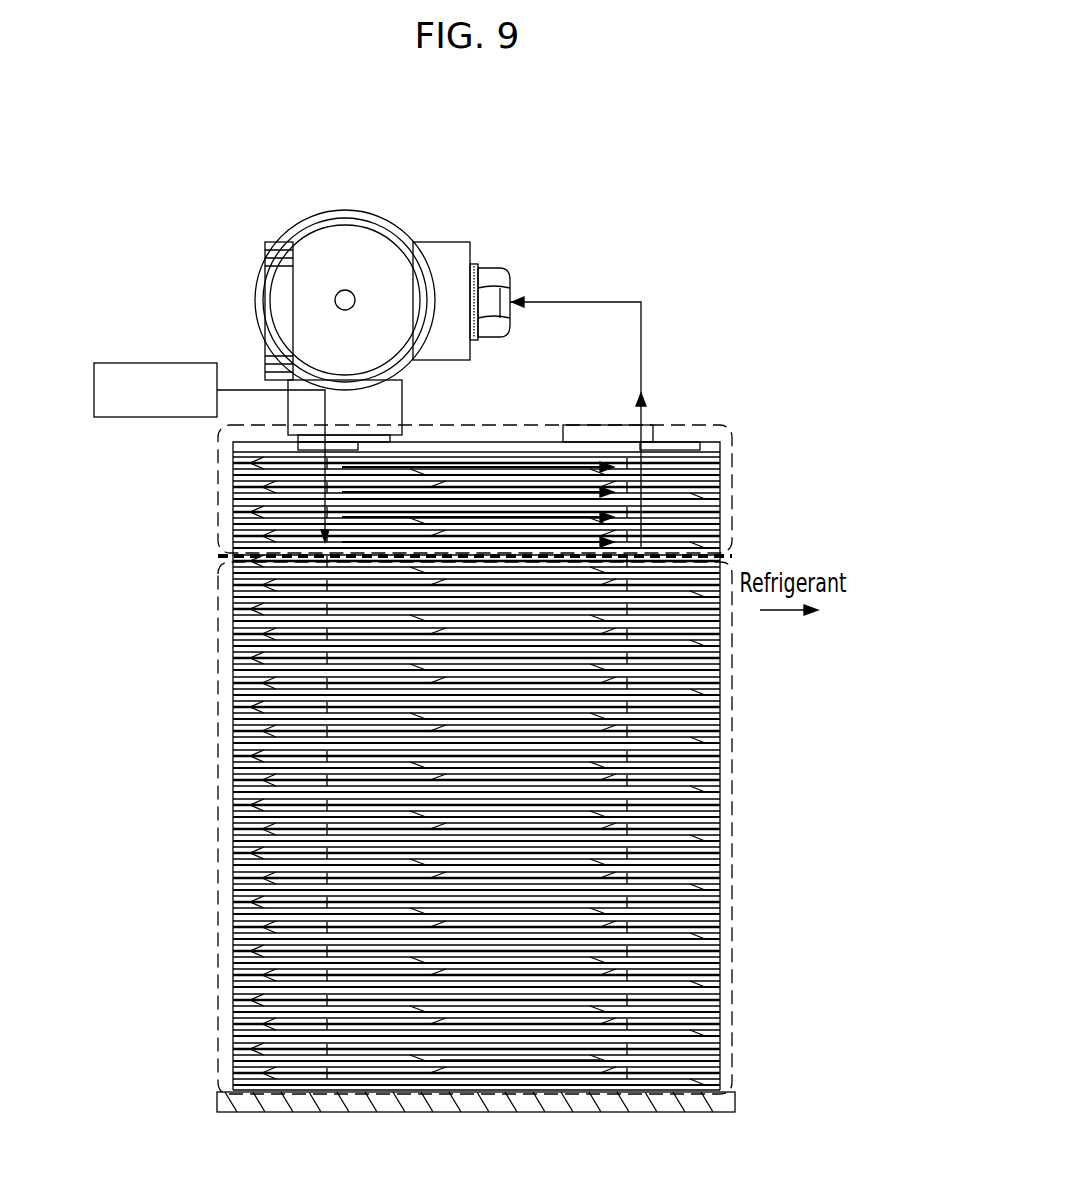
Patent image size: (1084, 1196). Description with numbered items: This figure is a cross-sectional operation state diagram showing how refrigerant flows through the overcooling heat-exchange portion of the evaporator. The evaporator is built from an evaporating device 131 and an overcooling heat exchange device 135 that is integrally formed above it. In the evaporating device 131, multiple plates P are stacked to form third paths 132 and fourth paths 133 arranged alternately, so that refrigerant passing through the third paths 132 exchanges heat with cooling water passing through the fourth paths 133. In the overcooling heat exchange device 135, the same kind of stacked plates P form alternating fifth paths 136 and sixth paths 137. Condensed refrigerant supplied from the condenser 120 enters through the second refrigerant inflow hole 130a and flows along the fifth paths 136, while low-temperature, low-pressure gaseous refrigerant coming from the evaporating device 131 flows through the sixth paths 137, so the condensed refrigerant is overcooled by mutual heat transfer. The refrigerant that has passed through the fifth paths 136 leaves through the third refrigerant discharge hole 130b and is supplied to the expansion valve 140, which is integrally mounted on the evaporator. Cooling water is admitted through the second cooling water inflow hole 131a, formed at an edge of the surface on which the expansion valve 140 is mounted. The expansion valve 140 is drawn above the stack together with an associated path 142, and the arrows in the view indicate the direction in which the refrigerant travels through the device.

The condenser 120 is at (155, 362).
The expansion valve 140 is at (315, 248).
The eighth path 142 is at (357, 257).
The second refrigerant inflow hole 130a is at (318, 452).
The third refrigerant discharge hole 130b is at (656, 462).
The evaporating device 131 is at (735, 770).
The second cooling water inflow hole 131a is at (590, 429).
The third path 132 is at (450, 1004).
The fourth path 133 is at (522, 992).
The overcooling heat exchange device 135 is at (735, 480).
The fifth path 136 is at (468, 485).
The sixth path 137 is at (531, 501).
The plate P is at (232, 476).